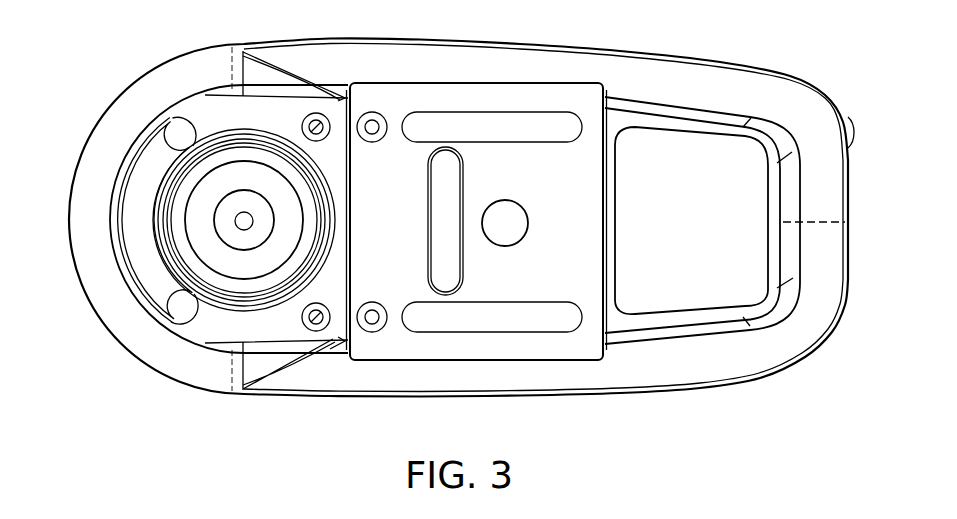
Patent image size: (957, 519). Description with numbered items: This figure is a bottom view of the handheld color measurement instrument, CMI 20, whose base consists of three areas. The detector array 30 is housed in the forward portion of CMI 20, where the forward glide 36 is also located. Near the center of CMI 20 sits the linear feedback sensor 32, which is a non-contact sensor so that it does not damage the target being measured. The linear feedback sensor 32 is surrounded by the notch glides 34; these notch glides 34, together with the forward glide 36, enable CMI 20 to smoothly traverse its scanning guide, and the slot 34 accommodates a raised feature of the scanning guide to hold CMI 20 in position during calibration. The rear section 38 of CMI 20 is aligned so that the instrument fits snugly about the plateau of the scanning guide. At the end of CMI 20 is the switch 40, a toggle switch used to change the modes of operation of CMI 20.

The CMI 20 is at (84, 114).
The detector array 30 is at (244, 226).
The linear feedback sensor 32 is at (528, 222).
The notch glides 34 is at (520, 141).
The forward glide 36 is at (145, 277).
The rear section 38 is at (748, 291).
The switch 40 is at (846, 125).